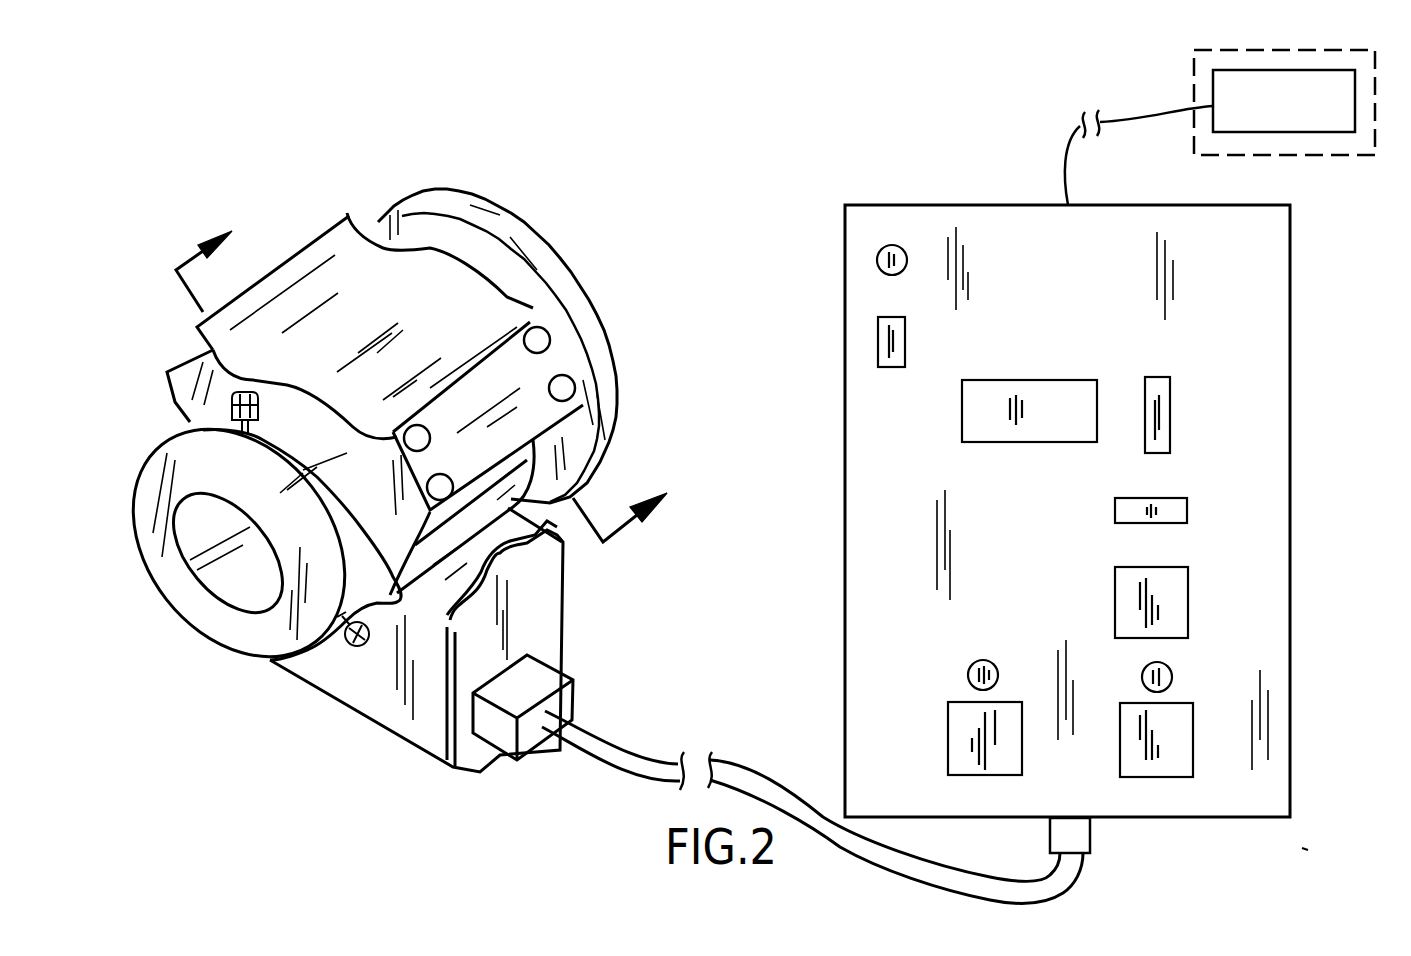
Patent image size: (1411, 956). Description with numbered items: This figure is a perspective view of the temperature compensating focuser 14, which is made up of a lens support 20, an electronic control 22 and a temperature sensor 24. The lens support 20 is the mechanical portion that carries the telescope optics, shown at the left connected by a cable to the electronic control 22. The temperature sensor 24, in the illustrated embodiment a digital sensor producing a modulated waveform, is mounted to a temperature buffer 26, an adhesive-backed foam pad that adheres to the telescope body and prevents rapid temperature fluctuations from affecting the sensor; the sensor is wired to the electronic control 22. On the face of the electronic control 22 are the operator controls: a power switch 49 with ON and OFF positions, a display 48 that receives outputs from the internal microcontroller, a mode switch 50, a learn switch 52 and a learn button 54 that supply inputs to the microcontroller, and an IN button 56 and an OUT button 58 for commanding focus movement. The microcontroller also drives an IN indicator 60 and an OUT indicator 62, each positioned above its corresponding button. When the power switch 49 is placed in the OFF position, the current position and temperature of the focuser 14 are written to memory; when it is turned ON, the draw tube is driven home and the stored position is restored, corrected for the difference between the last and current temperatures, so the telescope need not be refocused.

The temperature compensating focuser 14 is at (634, 223).
The lens support 20 is at (512, 203).
The electronic control 22 is at (1292, 320).
The temperature sensor 24 is at (1213, 92).
The temperature buffer 26 is at (1193, 62).
The display 48 is at (926, 433).
The power switch 49 is at (843, 340).
The mode switch 50 is at (1280, 363).
The learn switch 52 is at (1225, 478).
The learn button 54 is at (1224, 598).
The IN button 56 is at (906, 738).
The OUT button 58 is at (1235, 732).
The IN indicator 60 is at (928, 675).
The OUT indicator 62 is at (1209, 677).